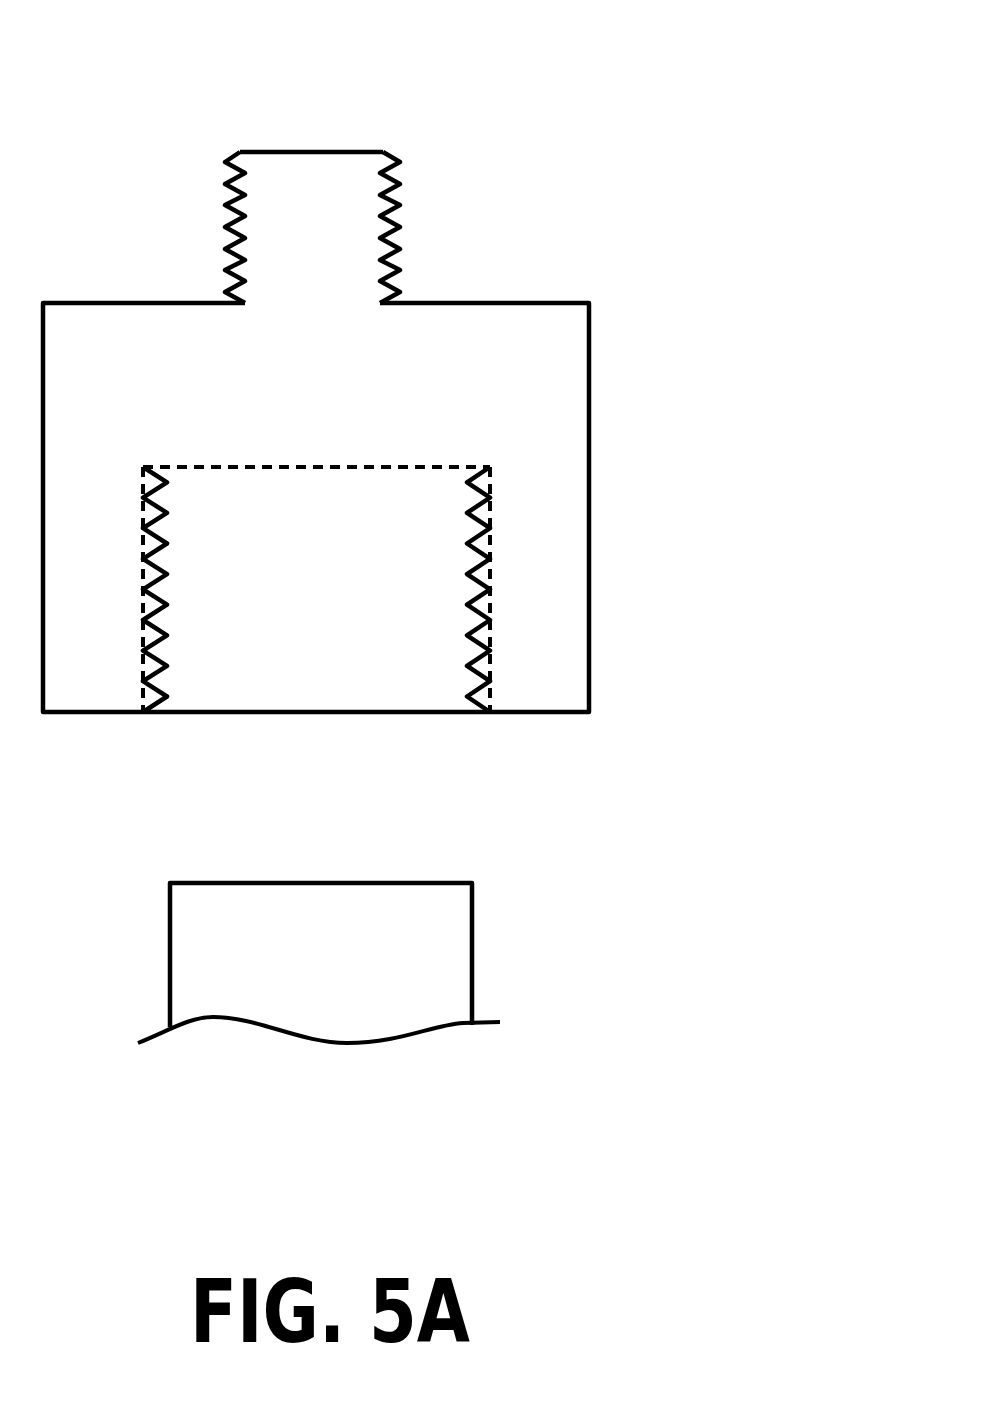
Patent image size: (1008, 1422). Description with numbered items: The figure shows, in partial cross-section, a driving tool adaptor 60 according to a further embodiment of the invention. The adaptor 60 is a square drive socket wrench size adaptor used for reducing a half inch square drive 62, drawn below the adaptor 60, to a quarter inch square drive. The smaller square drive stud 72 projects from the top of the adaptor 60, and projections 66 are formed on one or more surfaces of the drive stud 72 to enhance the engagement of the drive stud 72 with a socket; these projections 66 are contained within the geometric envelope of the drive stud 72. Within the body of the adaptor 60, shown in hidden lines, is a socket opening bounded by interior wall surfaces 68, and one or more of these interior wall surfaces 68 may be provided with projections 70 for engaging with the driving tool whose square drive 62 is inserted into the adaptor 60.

The driving tool adaptor 60 is at (680, 405).
The square drive 62 is at (472, 953).
The projections 66 is at (395, 217).
The interior wall surfaces 68 is at (148, 667).
The projections 70 is at (440, 668).
The drive stud 72 is at (313, 152).